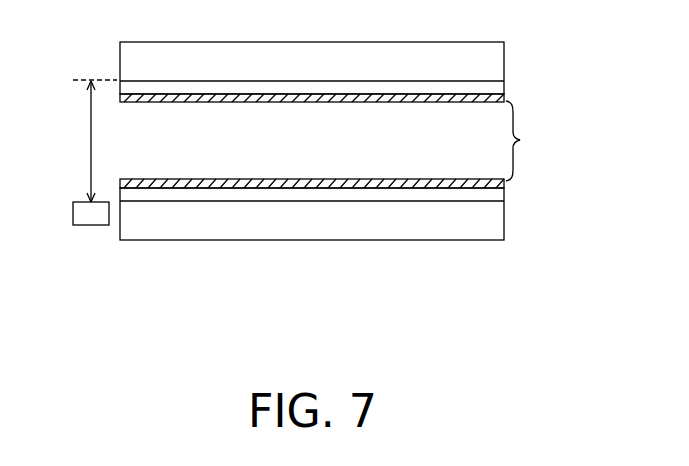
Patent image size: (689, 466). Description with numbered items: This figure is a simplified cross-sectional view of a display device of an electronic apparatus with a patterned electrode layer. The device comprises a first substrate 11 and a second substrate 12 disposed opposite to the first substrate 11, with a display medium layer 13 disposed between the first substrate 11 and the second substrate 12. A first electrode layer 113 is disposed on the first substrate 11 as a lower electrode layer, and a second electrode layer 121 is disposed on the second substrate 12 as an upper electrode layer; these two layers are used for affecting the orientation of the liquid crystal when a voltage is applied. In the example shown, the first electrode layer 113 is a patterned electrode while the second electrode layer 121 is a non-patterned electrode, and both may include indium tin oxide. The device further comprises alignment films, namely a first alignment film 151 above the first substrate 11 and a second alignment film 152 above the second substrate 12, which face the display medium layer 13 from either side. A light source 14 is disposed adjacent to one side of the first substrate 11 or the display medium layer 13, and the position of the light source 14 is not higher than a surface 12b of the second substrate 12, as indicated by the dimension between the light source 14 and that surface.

The first substrate 11 is at (489, 223).
The first electrode layer 113 is at (455, 195).
The second substrate 12 is at (488, 63).
The second electrode layer 121 is at (489, 88).
The surface of the second substrate 12b is at (150, 80).
The display medium layer 13 is at (525, 141).
The light source 14 is at (87, 215).
The first alignment film 151 is at (497, 182).
The second alignment film 152 is at (492, 97).